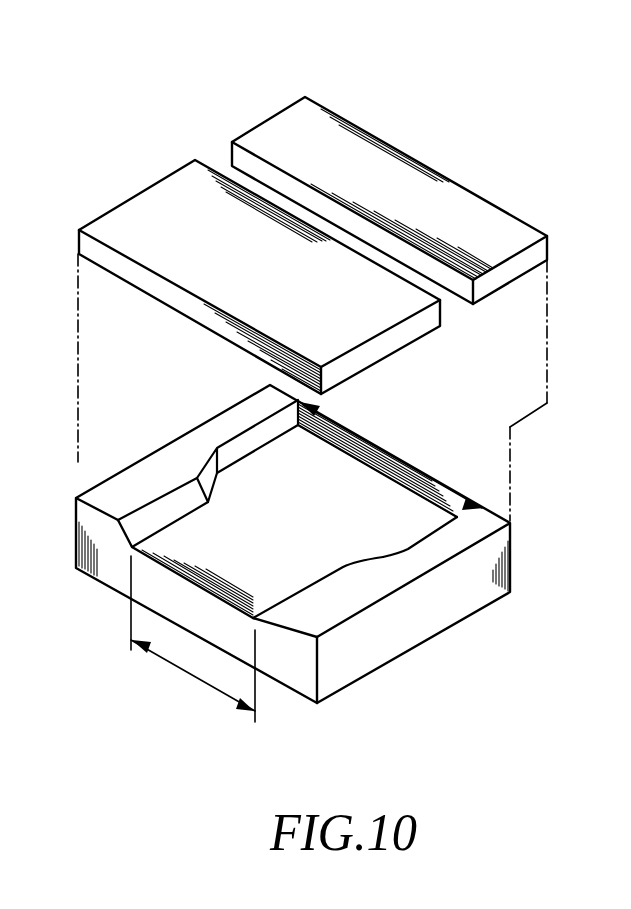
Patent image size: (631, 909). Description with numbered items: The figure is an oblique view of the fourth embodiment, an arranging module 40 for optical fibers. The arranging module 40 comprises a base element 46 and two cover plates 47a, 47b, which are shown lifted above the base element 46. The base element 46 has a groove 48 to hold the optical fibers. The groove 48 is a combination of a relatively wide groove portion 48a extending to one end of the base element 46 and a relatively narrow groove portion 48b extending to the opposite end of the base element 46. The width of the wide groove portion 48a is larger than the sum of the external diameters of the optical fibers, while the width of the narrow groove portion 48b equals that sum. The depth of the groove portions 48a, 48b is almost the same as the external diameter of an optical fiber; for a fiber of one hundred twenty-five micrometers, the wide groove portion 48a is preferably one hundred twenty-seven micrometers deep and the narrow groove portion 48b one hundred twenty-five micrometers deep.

The arranging module 40 is at (212, 102).
The base element 46 is at (445, 608).
The cover plate 47a is at (478, 196).
The cover plate 47b is at (115, 205).
The groove 48 is at (428, 482).
The wide groove portion 48a is at (423, 537).
The narrow groove portion 48b is at (303, 590).